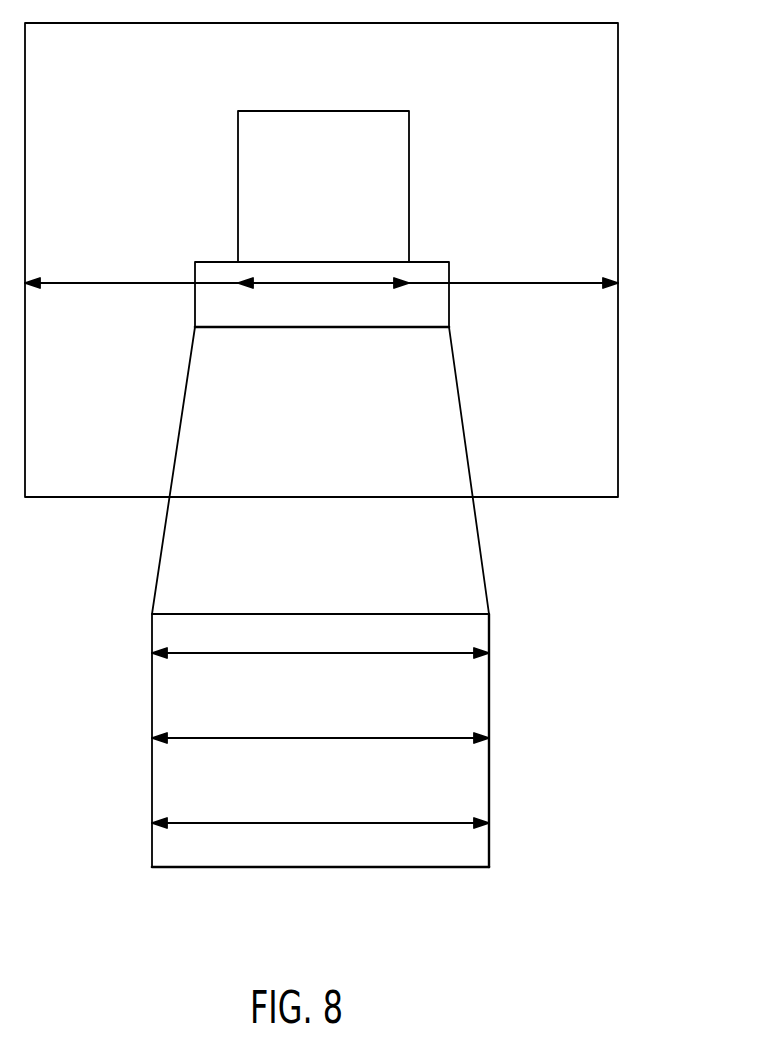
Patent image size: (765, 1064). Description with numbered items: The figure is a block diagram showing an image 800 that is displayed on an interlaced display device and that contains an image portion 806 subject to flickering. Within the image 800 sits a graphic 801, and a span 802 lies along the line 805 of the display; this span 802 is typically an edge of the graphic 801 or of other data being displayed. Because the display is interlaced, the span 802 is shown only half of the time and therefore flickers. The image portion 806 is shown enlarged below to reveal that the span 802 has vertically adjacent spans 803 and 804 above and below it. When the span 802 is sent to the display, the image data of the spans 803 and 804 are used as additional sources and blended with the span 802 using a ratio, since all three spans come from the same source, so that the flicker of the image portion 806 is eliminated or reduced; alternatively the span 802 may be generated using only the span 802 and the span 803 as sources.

The image 800 is at (618, 284).
The graphic 801 is at (409, 176).
The span 802 is at (365, 284).
The span 803 is at (447, 652).
The span 804 is at (447, 822).
The line 805 is at (132, 283).
The image portion 806 is at (322, 327).